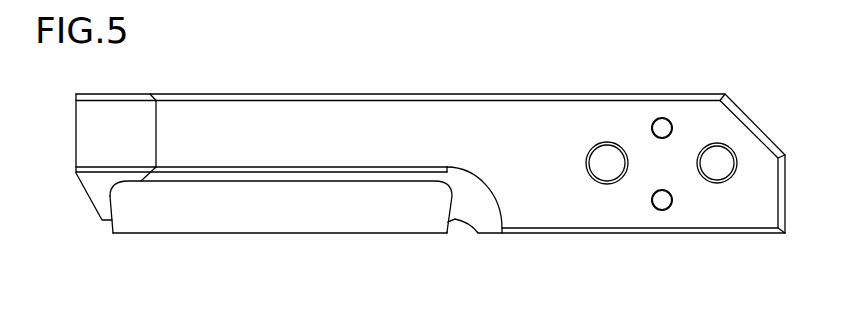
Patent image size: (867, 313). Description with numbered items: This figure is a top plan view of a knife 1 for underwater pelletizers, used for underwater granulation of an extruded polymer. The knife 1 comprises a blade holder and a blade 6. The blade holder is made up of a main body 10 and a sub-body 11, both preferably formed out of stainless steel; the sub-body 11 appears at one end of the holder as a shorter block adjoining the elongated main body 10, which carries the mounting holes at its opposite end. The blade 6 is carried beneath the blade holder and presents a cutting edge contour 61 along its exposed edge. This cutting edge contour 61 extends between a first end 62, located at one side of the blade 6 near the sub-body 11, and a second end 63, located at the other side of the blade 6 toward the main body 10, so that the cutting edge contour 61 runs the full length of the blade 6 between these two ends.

The knife 1 is at (648, 64).
The main body 10 is at (498, 128).
The sub-body 11 is at (93, 133).
The blade 6 is at (368, 250).
The cutting edge contour 61 is at (237, 245).
The first end 62 is at (106, 241).
The second end 63 is at (460, 242).